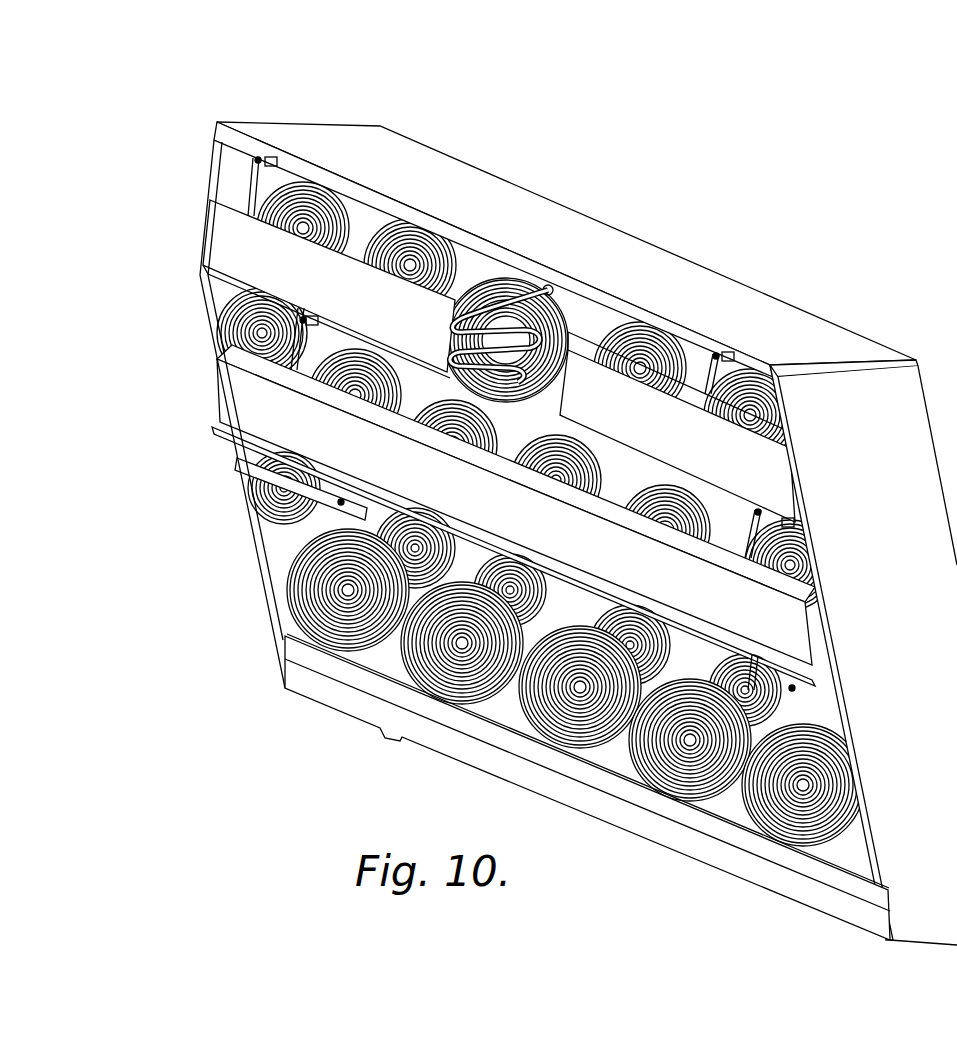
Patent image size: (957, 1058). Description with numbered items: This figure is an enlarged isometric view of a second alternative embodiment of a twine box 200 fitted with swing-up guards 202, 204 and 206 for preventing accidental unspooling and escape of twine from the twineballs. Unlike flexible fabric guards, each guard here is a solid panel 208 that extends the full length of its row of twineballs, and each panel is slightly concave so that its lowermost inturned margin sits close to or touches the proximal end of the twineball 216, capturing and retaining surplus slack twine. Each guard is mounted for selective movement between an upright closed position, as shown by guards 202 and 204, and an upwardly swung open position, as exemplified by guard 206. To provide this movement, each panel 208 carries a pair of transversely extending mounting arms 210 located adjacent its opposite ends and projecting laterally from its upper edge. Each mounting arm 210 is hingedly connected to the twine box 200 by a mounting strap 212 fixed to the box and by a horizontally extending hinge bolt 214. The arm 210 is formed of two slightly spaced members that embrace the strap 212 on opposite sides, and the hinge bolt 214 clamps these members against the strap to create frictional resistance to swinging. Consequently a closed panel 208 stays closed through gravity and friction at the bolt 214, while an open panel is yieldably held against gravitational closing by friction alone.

The twine box 200 is at (718, 250).
The guard 202 is at (205, 231).
The guard 204 is at (220, 392).
The guard 206 is at (230, 455).
The solid panel 208 is at (360, 240).
The mounting arm 210 is at (250, 198).
The mounting strap 212 is at (285, 165).
The hinge bolt 214 is at (258, 160).
The twineball 216 is at (510, 275).